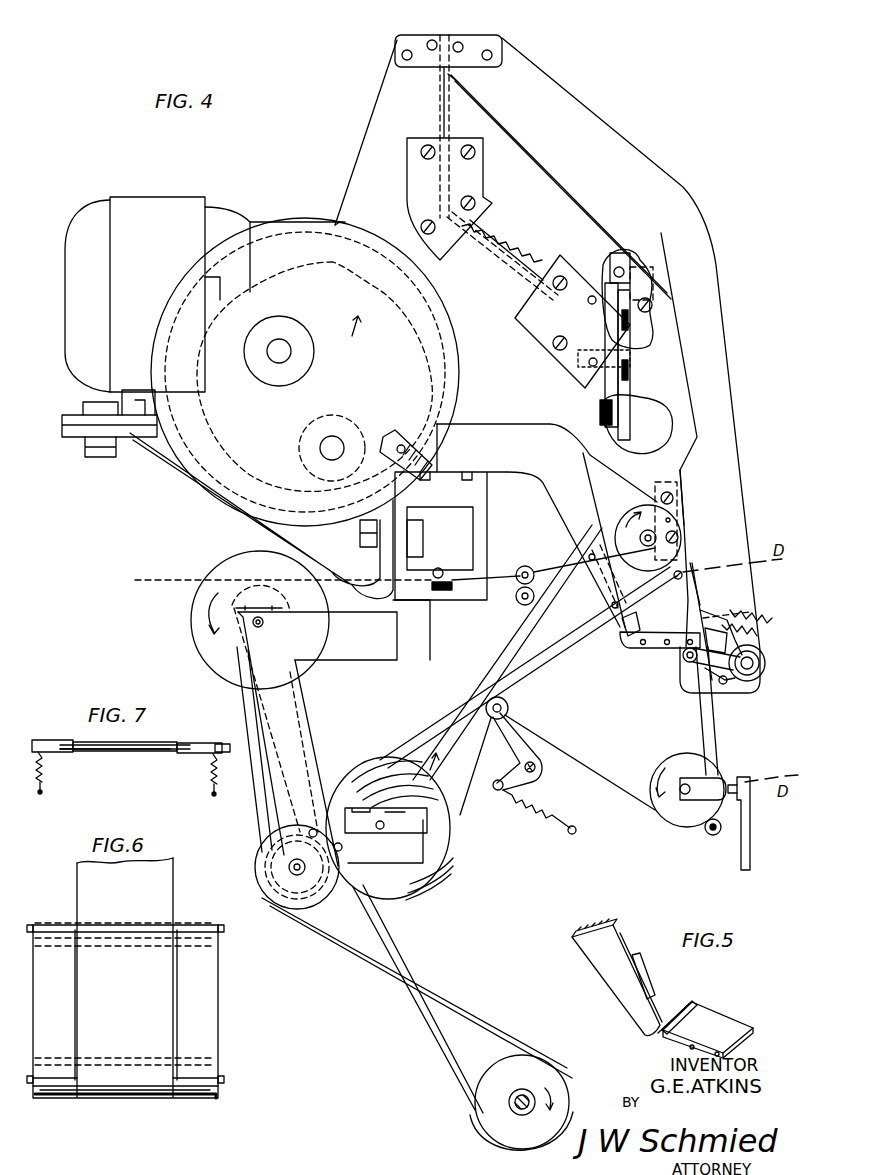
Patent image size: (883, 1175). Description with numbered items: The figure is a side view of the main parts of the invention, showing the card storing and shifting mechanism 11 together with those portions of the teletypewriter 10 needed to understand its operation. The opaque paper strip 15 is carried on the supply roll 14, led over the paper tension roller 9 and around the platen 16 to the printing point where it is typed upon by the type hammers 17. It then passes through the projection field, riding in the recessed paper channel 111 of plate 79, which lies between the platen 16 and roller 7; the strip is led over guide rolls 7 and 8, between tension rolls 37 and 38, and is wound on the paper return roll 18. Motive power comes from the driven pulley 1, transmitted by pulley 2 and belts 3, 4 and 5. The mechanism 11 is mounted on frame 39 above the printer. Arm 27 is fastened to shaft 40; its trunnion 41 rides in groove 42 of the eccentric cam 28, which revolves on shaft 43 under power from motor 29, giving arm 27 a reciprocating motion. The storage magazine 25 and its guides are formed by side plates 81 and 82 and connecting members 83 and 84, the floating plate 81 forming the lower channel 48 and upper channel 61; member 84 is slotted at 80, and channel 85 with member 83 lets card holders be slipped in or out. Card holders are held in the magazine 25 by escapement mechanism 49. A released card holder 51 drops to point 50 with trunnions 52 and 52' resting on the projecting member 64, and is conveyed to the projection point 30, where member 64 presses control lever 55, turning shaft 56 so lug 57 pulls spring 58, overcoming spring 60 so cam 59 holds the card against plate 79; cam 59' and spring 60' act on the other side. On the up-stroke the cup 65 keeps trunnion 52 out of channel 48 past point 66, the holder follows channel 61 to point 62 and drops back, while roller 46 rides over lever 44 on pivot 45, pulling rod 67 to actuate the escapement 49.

In FIG. 4, the driven pulley 1 is at (563, 1112).
In FIG. 4, the pulley 2 is at (272, 878).
In FIG. 4, the belt 3 is at (336, 940).
In FIG. 4, the belt 4 is at (558, 642).
In FIG. 4, the belt 5 is at (256, 803).
In FIG. 4, the guide roll 7 is at (673, 513).
In FIG. 4, the guide roll 8 is at (640, 540).
In FIG. 6, the guide roll 8 is at (200, 926).
In FIG. 4, the paper tension roller 9 is at (520, 702).
In FIG. 4, the teletypewriter 10 is at (529, 793).
In FIG. 4, the card storing and shifting mechanism 11 is at (312, 175).
In FIG. 4, the supply roll 14 is at (420, 878).
In FIG. 4, the paper strip 15 is at (702, 722).
In FIG. 7, the paper strip 15 is at (165, 742).
In FIG. 6, the paper strip 15 is at (172, 902).
In FIG. 4, the platen 16 is at (677, 818).
In FIG. 6, the platen 16 is at (207, 1098).
In FIG. 4, the type hammers 17 is at (752, 813).
In FIG. 4, the paper return roll 18 is at (212, 582).
In FIG. 4, the storage magazine 25 is at (488, 267).
In FIG. 4, the arm 27 is at (550, 508).
In FIG. 5, the arm 27 is at (618, 942).
In FIG. 4, the eccentric cam 28 is at (273, 233).
In FIG. 4, the motor 29 is at (153, 200).
In FIG. 4, the projection point 30 is at (702, 603).
In FIG. 4, the tension roll 37 is at (533, 570).
In FIG. 4, the tension roll 38 is at (525, 603).
In FIG. 4, the frame 39 is at (125, 440).
In FIG. 4, the shaft 40 is at (333, 440).
In FIG. 4, the trunnion 41 is at (418, 461).
In FIG. 4, the groove 42 is at (432, 342).
In FIG. 4, the shaft 43 is at (292, 351).
In FIG. 4, the lever 44 is at (620, 398).
In FIG. 4, the pivot 45 is at (605, 372).
In FIG. 4, the roller 46 is at (600, 598).
In FIG. 5, the roller 46 is at (643, 978).
In FIG. 4, the channeled guide 48 is at (562, 318).
In FIG. 4, the escapement mechanism 49 is at (645, 322).
In FIG. 4, the point 50 is at (687, 462).
In FIG. 4, the card holder 51 is at (700, 682).
In FIG. 7, the card holder 51 is at (58, 752).
In FIG. 4, the trunnion 52 is at (725, 624).
In FIG. 7, the trunnion 52 is at (47, 736).
In FIG. 7, the trunnion 52' is at (233, 741).
In FIG. 4, the control lever 55 is at (690, 663).
In FIG. 4, the shaft 56 is at (750, 681).
In FIG. 4, the lug 57 is at (724, 686).
In FIG. 4, the spring 58 is at (724, 640).
In FIG. 4, the cam 59 is at (755, 633).
In FIG. 7, the cam 59 is at (26, 767).
In FIG. 7, the cam 59' is at (201, 769).
In FIG. 4, the spring 60 is at (758, 608).
In FIG. 7, the spring 60 is at (27, 790).
In FIG. 7, the spring 60' is at (201, 792).
In FIG. 4, the channeled guide 61 is at (580, 176).
In FIG. 4, the point 62 is at (455, 86).
In FIG. 4, the projecting member 64 is at (655, 638).
In FIG. 5, the projecting member 64 is at (722, 1020).
In FIG. 4, the cup 65 is at (634, 624).
In FIG. 5, the cup 65 is at (690, 1003).
In FIG. 4, the point 66 is at (682, 390).
In FIG. 4, the rod 67 is at (619, 267).
In FIG. 4, the plate 79 is at (717, 752).
In FIG. 7, the plate 79 is at (200, 742).
In FIG. 6, the plate 79 is at (215, 985).
In FIG. 4, the slot 80 is at (440, 183).
In FIG. 4, the floating side plate 81 is at (517, 140).
In FIG. 4, the side plate 82 is at (388, 80).
In FIG. 4, the connecting member 83 is at (440, 34).
In FIG. 4, the connecting member 84 is at (537, 272).
In FIG. 4, the channel 85 is at (452, 35).
In FIG. 7, the paper channel 111 is at (75, 742).
In FIG. 6, the paper channel 111 is at (173, 1022).